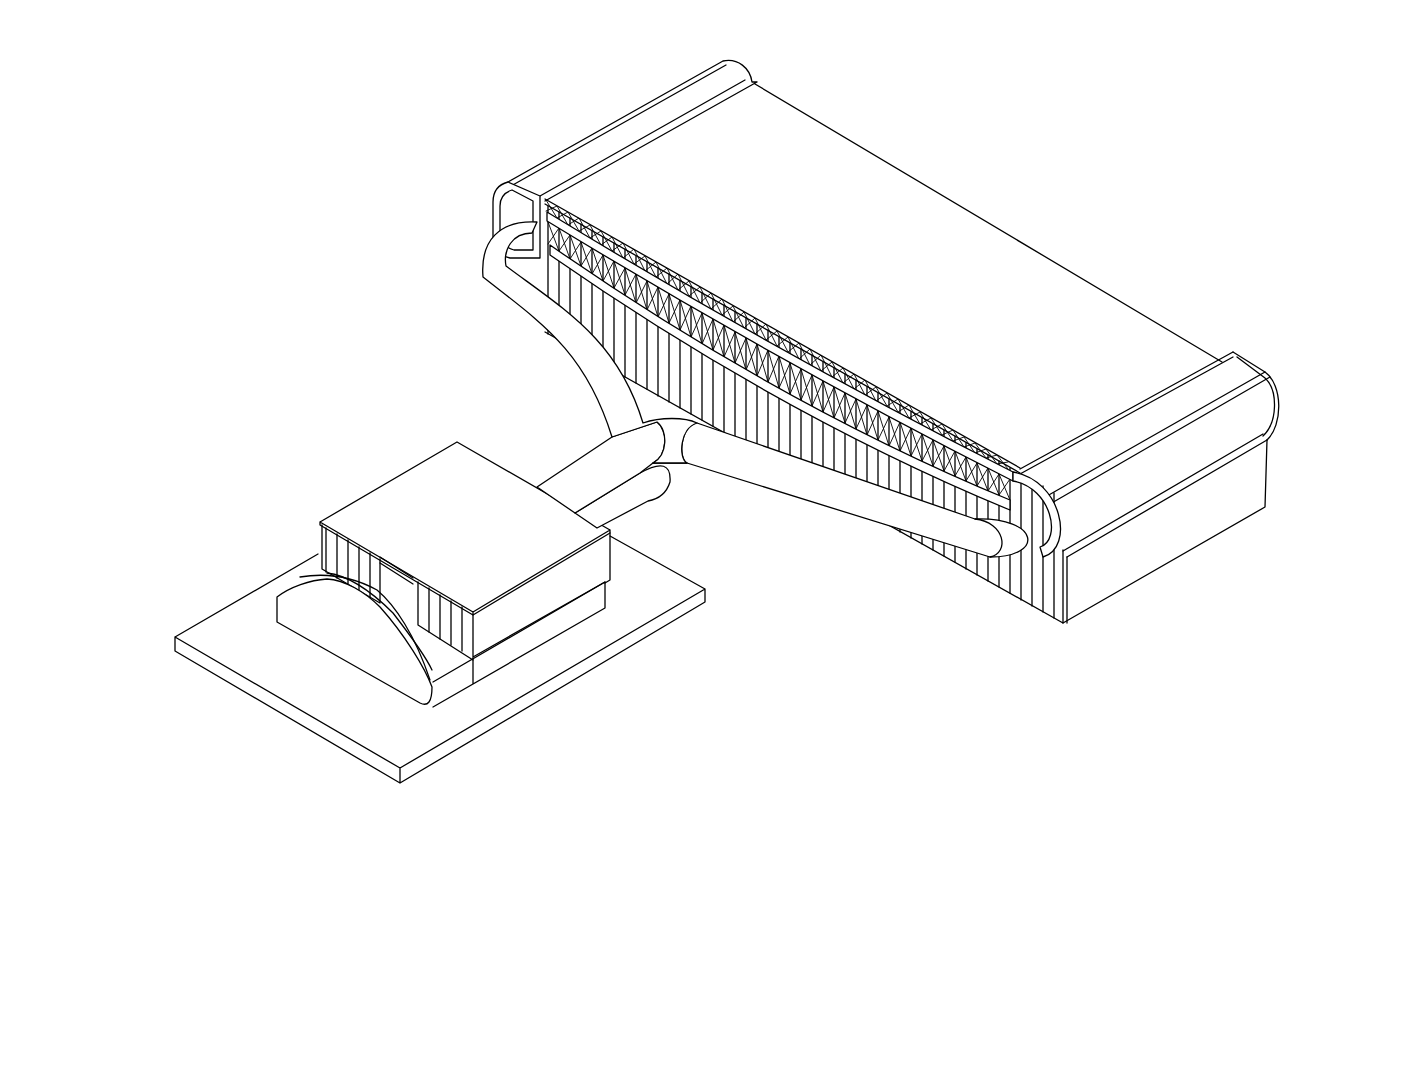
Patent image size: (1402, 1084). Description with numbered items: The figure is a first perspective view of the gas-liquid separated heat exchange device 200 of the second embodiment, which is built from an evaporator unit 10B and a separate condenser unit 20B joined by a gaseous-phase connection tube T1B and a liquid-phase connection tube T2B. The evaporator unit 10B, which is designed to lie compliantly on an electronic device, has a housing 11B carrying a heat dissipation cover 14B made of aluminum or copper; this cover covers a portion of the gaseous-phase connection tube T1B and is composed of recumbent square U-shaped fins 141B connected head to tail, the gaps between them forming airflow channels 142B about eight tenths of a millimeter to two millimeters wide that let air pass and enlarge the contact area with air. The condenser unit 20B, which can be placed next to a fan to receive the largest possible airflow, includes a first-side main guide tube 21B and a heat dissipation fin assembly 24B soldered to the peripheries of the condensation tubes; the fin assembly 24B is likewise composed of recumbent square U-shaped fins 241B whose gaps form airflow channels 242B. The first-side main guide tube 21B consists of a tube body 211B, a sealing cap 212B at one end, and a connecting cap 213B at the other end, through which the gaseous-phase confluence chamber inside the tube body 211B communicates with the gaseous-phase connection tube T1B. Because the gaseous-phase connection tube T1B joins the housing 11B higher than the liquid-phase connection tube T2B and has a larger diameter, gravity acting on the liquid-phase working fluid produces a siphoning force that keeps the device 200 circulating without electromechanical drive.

The gas-liquid separated heat exchange device 200 is at (1260, 128).
The evaporator unit 10B is at (283, 718).
The housing 11B is at (347, 633).
The heat dissipation cover 14B is at (752, 667).
The recumbent square U-shaped fins 141B is at (550, 592).
The airflow channels 142B is at (470, 632).
The condenser unit 20B is at (1110, 283).
The first-side main guide tube 21B is at (1322, 628).
The tube body 211B is at (1127, 487).
The sealing cap 212B is at (1262, 460).
The connecting cap 213B is at (1068, 560).
The heat dissipation fin assembly 24B is at (1047, 57).
The recumbent square U-shaped fins 241B is at (770, 325).
The airflow channels 242B is at (777, 343).
The gaseous-phase connection tube T1B is at (765, 480).
The liquid-phase connection tube T2B is at (555, 349).